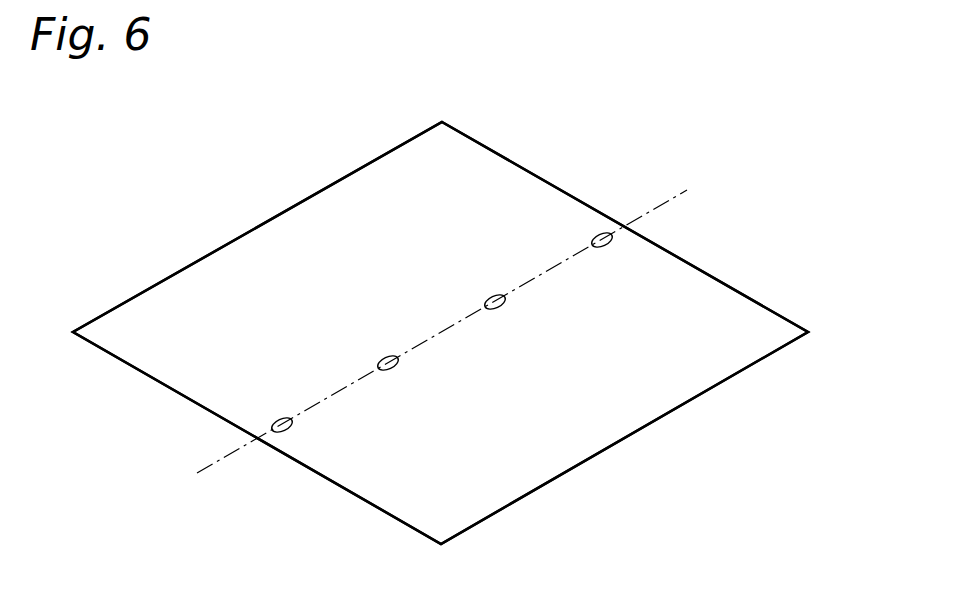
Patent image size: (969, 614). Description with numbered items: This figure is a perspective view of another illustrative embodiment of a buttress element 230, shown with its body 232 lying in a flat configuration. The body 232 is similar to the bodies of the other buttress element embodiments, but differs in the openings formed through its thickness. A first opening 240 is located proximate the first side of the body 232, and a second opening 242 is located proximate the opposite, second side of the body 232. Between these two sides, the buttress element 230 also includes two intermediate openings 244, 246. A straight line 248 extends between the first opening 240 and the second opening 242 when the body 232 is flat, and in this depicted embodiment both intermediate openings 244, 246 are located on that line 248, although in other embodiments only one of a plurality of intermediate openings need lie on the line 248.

The buttress element 230 is at (230, 168).
The body 232 is at (737, 320).
The first opening 240 is at (273, 419).
The second opening 242 is at (600, 232).
The intermediate opening 244 is at (381, 355).
The intermediate opening 246 is at (495, 293).
The straight line 248 is at (212, 467).